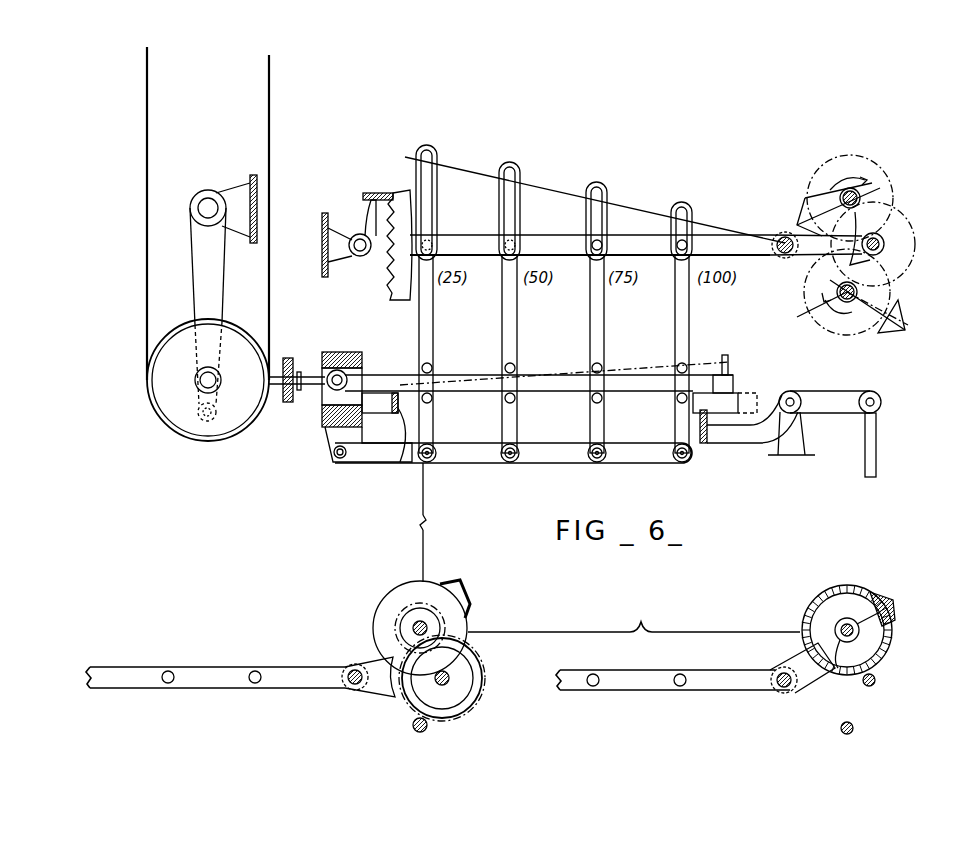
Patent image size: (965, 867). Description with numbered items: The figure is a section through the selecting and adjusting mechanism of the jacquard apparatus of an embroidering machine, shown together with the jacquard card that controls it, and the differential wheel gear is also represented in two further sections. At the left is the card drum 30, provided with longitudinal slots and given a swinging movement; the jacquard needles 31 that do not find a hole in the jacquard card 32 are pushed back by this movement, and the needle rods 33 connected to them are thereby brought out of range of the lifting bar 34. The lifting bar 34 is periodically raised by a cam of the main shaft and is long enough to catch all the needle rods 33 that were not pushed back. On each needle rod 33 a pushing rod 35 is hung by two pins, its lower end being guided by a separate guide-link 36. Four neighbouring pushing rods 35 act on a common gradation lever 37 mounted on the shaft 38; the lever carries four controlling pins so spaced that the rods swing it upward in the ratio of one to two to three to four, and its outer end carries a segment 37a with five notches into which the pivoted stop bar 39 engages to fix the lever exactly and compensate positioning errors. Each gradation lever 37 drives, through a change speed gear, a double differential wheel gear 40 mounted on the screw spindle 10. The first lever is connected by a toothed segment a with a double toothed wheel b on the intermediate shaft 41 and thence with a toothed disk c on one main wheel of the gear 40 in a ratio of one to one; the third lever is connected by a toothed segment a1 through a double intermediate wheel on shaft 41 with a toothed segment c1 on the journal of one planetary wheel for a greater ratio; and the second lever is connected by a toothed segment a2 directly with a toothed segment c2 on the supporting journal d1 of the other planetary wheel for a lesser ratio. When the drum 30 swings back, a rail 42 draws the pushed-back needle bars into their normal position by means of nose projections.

The screw spindle 10 is at (850, 190).
The card drum 30 is at (150, 350).
The jacquard needles 31 is at (268, 380).
The jacquard card 32 is at (270, 310).
The needle rods 33 is at (380, 373).
The lifting bar 34 is at (707, 440).
The pushing rods 35 is at (433, 333).
The guide-link 36 is at (358, 465).
The gradation lever 37 is at (460, 237).
The segment 37a is at (385, 265).
The shaft 38 is at (782, 241).
The stop bar 39 is at (378, 200).
The double differential wheel gear 40 is at (806, 186).
The intermediate shaft 41 is at (884, 249).
The rail 42 is at (402, 464).
The toothed segment a is at (398, 698).
The double toothed wheel b is at (470, 710).
The toothed disk c is at (410, 600).
The toothed segment a1 is at (882, 222).
The toothed segment c1 is at (888, 240).
The toothed segment a2 is at (800, 666).
The toothed segment c2 is at (852, 672).
The supporting journal d1 is at (893, 642).